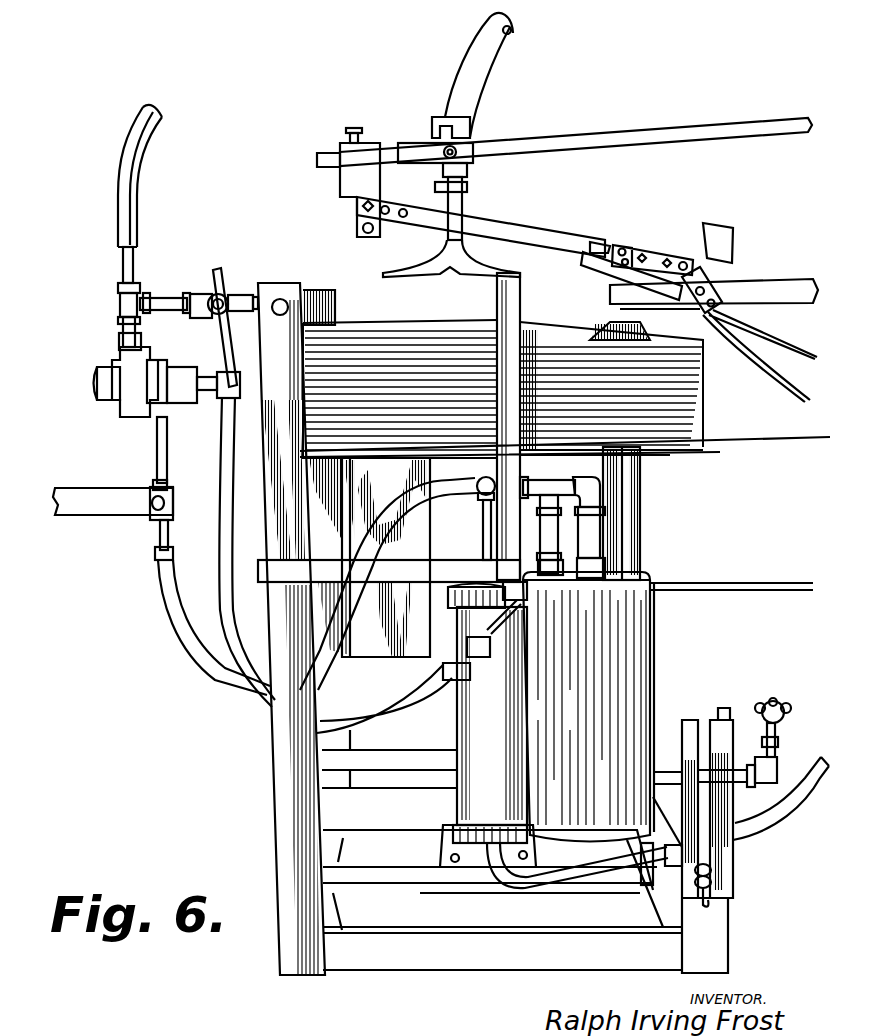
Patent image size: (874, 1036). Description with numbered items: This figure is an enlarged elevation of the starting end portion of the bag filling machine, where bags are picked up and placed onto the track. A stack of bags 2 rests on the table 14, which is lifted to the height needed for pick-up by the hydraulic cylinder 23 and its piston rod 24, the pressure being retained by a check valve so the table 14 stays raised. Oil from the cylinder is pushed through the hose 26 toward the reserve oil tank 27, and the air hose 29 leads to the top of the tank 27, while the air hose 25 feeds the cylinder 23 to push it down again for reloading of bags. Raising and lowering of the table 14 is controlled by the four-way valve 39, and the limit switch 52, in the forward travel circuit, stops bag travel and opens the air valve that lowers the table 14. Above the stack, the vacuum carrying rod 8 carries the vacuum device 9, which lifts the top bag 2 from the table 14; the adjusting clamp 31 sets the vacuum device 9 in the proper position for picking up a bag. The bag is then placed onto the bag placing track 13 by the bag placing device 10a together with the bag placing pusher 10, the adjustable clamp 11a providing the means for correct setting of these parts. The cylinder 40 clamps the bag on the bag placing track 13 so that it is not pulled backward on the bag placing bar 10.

The bag 2 is at (558, 323).
The vacuum carrying rod 8 is at (566, 140).
The vacuum device 9 is at (432, 265).
The bag placing pusher 10 is at (720, 246).
The bag placing device 10a is at (513, 223).
The adjustable clamp 11a is at (346, 152).
The bag placing track 13 is at (762, 282).
The table 14 is at (718, 450).
The hydraulic cylinder 23 is at (484, 713).
The piston rod 24 is at (480, 481).
The air hose 25 is at (222, 568).
The hose 26 is at (537, 892).
The reserve oil tank 27 is at (588, 707).
The air hose 29 is at (166, 624).
The adjusting clamp 31 is at (402, 143).
The 4-way valve 39 is at (226, 294).
The cylinder 40 is at (129, 418).
The limit switch 52 is at (200, 292).